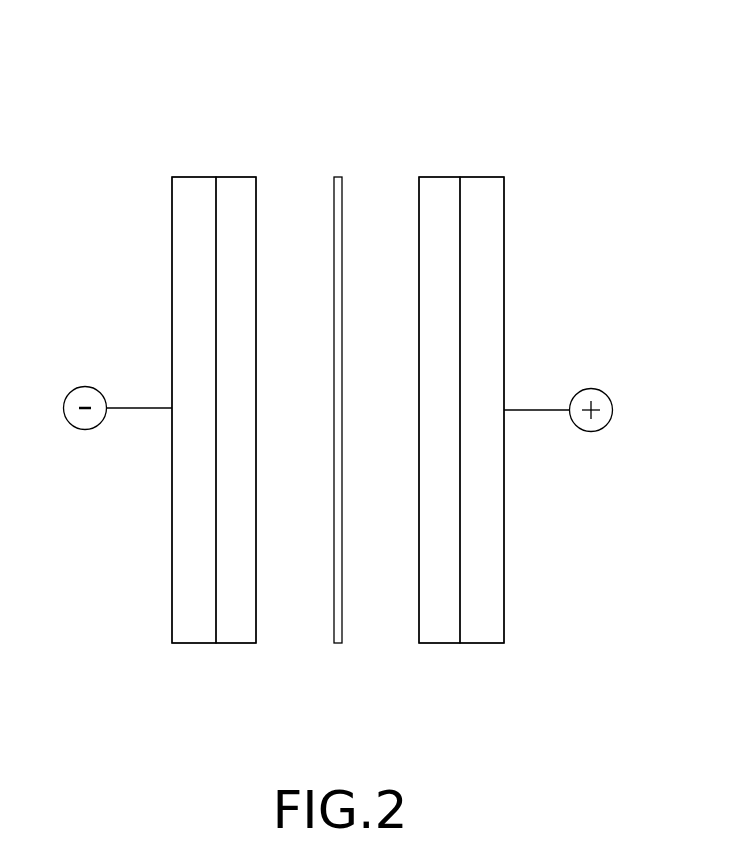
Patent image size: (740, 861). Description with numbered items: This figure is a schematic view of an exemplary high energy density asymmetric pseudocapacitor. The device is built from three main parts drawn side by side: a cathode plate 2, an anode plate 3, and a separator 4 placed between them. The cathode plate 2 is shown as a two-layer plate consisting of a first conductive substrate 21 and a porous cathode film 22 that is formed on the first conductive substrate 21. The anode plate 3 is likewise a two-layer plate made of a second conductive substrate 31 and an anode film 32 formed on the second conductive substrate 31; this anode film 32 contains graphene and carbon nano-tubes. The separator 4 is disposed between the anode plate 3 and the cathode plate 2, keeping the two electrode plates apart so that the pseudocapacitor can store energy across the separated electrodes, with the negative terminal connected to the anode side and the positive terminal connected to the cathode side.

The cathode plate 2 is at (402, 70).
The first conductive substrate 21 is at (479, 195).
The porous cathode film 22 is at (438, 197).
The anode plate 3 is at (266, 70).
The second conductive substrate 31 is at (193, 197).
The anode film 32 is at (234, 195).
The separator 4 is at (340, 185).